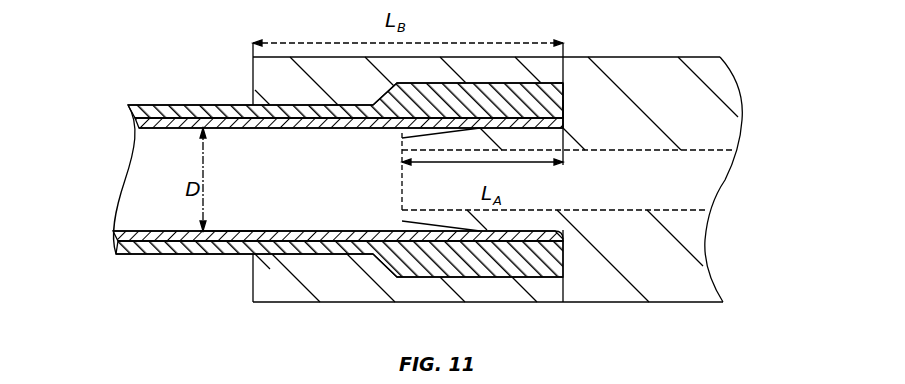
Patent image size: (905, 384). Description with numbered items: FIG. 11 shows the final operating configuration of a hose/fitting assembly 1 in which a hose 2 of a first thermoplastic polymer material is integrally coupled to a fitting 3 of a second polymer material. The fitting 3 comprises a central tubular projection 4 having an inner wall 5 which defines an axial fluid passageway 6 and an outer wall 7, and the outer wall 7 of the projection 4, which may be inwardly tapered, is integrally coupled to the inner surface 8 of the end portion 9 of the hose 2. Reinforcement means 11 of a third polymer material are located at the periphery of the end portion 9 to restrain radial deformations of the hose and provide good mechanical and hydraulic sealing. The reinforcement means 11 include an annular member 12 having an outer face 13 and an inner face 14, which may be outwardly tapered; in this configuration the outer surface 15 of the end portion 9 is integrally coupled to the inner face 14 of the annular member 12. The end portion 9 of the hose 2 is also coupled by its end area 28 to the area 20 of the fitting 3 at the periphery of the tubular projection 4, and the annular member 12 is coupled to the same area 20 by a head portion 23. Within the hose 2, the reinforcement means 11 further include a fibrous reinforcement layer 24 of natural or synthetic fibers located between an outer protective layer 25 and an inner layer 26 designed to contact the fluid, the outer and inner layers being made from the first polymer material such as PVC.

The hose/fitting assembly 1 is at (126, 71).
The hose 2 is at (221, 94).
The fitting 3 is at (713, 73).
The central tubular projection 4 is at (413, 222).
The inner wall 5 is at (445, 209).
The axial fluid passageway 6 is at (602, 204).
The outer wall 7 is at (565, 103).
The inner surface 8 is at (477, 132).
The end portion 9 is at (324, 217).
The reinforcement means 11 is at (598, 313).
The annular member 12 is at (277, 287).
The outer face 13 is at (323, 57).
The inner face 14 is at (315, 110).
The outer surface 15 is at (298, 107).
The area of the fitting 20 is at (566, 103).
The head portion 23 is at (550, 127).
The fibrous reinforcement layer 24 is at (190, 243).
The outer protective layer 25 is at (137, 253).
The inner layer 26 is at (237, 241).
The end area 28 is at (567, 107).